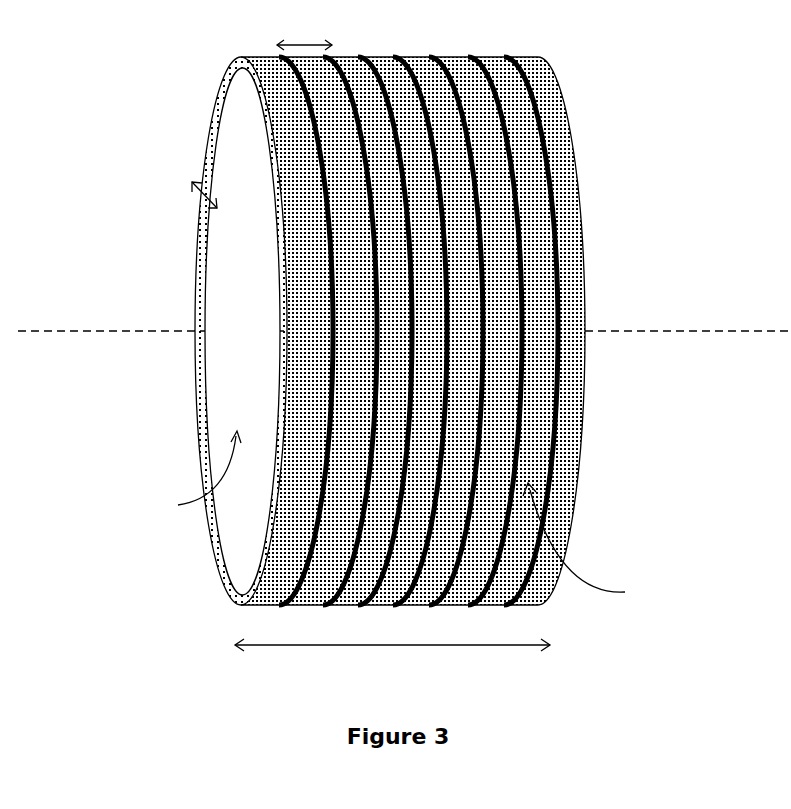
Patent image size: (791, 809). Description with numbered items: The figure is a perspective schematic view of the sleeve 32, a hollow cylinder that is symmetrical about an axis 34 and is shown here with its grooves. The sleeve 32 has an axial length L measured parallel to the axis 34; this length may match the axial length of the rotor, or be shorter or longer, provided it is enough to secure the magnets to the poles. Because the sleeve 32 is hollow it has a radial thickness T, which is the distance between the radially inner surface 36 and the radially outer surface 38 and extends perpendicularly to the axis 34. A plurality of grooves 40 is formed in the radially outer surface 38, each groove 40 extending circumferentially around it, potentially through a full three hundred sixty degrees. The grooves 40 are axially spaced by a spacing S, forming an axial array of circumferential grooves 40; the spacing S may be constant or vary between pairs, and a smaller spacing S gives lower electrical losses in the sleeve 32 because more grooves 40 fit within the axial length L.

The sleeve 32 is at (562, 168).
The axis 34 is at (137, 333).
The radially inner surface 36 is at (189, 477).
The radially outer surface 38 is at (594, 545).
The grooves 40 is at (520, 310).
The spacing S is at (304, 32).
The radial thickness T is at (200, 200).
The axial length L is at (392, 662).